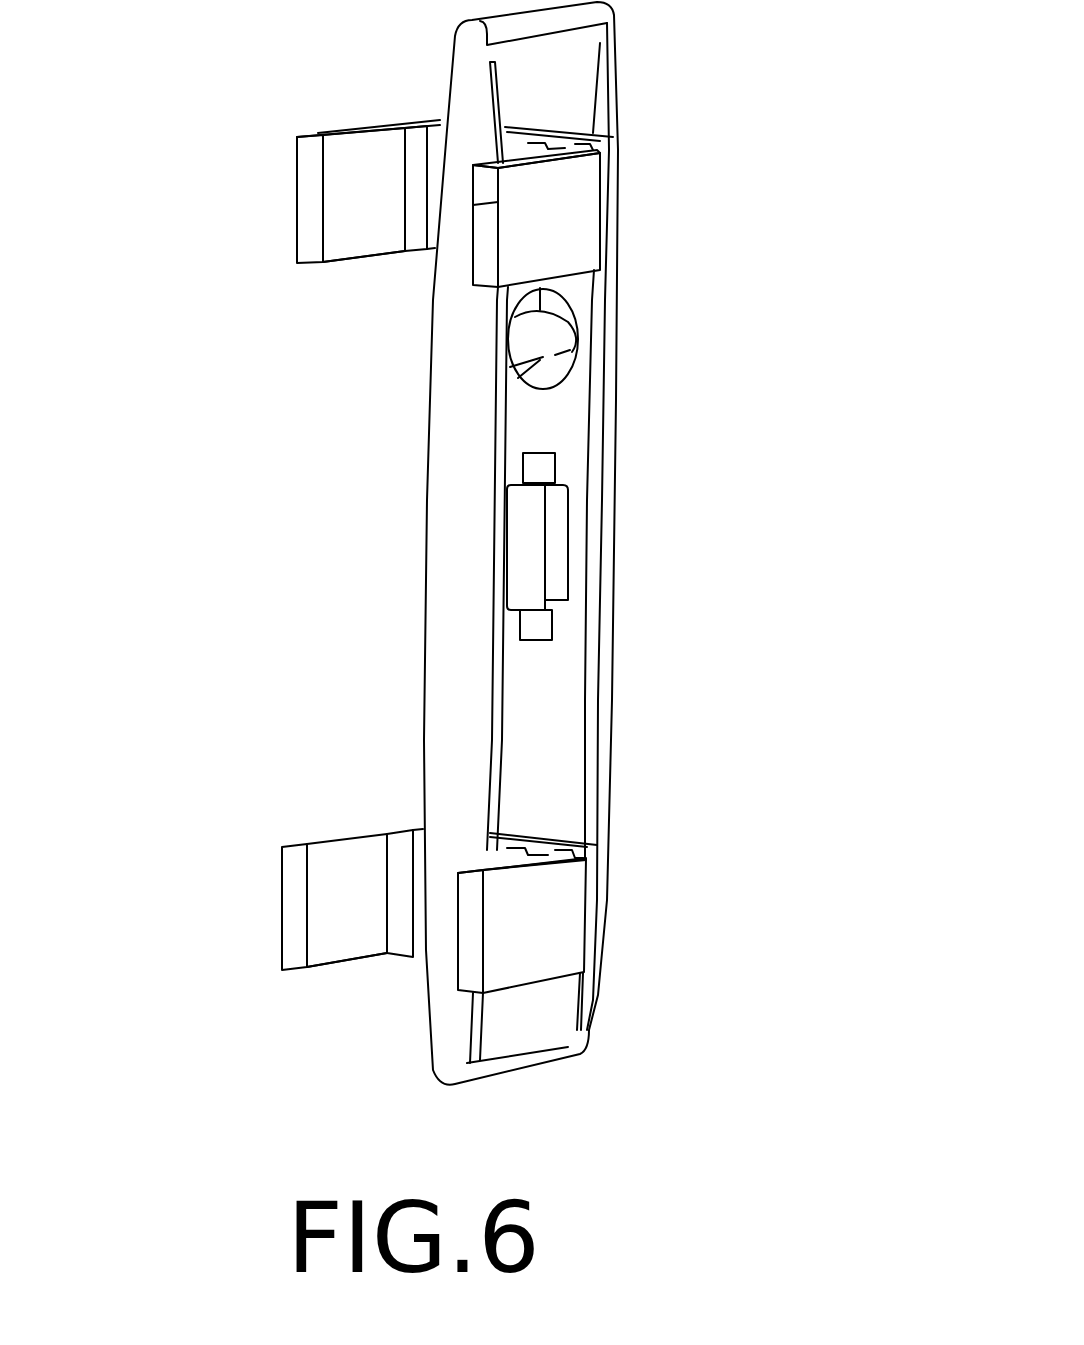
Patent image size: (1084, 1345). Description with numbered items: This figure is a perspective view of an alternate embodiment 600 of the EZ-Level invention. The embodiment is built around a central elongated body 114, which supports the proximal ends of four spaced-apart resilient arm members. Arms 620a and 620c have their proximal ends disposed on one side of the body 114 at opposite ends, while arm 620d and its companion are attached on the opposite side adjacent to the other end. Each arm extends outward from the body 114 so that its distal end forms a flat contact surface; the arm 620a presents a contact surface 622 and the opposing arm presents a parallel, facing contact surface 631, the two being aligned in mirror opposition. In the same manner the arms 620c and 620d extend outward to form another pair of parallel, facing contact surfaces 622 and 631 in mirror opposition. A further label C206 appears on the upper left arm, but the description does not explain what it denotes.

The alternate embodiment 600 is at (779, 116).
The frame body 114 is at (618, 410).
The contact surface 631 is at (507, 198).
The resilient arm member 620a is at (355, 128).
The resilient arm member 620c is at (510, 852).
The resilient arm member 620d is at (303, 847).
The contact surface 622 is at (360, 232).
The capacitor C206 is at (293, 218).